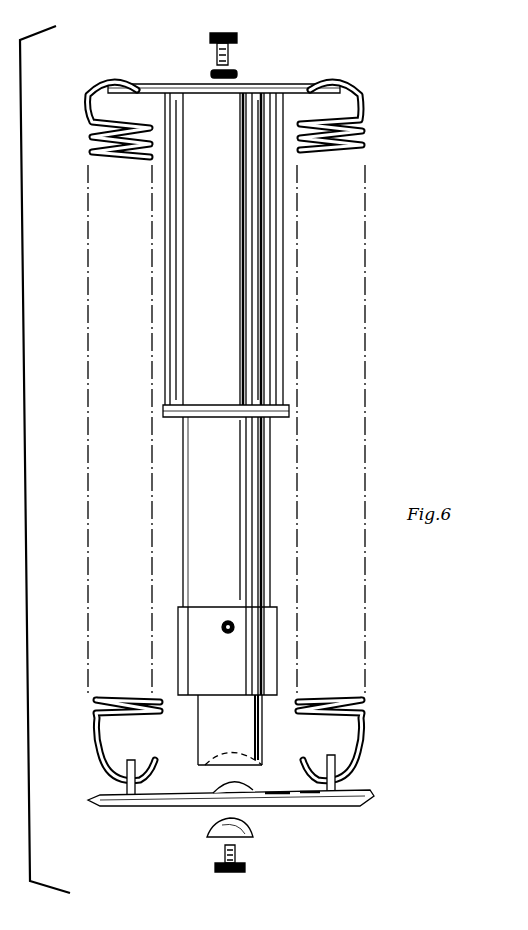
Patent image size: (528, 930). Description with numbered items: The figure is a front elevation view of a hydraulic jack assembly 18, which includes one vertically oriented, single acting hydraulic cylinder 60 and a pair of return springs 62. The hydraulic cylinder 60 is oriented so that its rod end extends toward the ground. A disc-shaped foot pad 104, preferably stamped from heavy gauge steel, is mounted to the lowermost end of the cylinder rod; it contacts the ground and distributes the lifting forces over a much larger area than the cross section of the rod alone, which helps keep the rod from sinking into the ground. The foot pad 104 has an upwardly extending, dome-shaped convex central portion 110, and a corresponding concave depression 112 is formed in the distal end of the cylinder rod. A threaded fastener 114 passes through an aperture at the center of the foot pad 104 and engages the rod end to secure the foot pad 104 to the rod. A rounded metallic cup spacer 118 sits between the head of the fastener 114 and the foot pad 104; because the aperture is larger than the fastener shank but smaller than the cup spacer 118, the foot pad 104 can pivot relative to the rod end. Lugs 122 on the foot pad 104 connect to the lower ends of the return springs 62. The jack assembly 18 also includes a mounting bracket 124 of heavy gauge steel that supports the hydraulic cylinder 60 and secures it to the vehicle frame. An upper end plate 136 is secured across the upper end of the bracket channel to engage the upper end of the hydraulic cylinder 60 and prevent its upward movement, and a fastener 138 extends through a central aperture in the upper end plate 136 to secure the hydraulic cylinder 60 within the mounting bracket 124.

The hydraulic jack assembly 18 is at (376, 398).
The hydraulic cylinder 60 is at (240, 268).
The return springs 62 is at (100, 158).
The foot pad 104 is at (330, 806).
The convex central portion 110 is at (215, 785).
The concave depression 112 is at (262, 765).
The threaded fastener 114 is at (237, 849).
The cup spacer 118 is at (207, 829).
The lugs 122 is at (336, 792).
The mounting bracket 124 is at (277, 334).
The upper end plate 136 is at (174, 84).
The fastener 138 is at (238, 38).